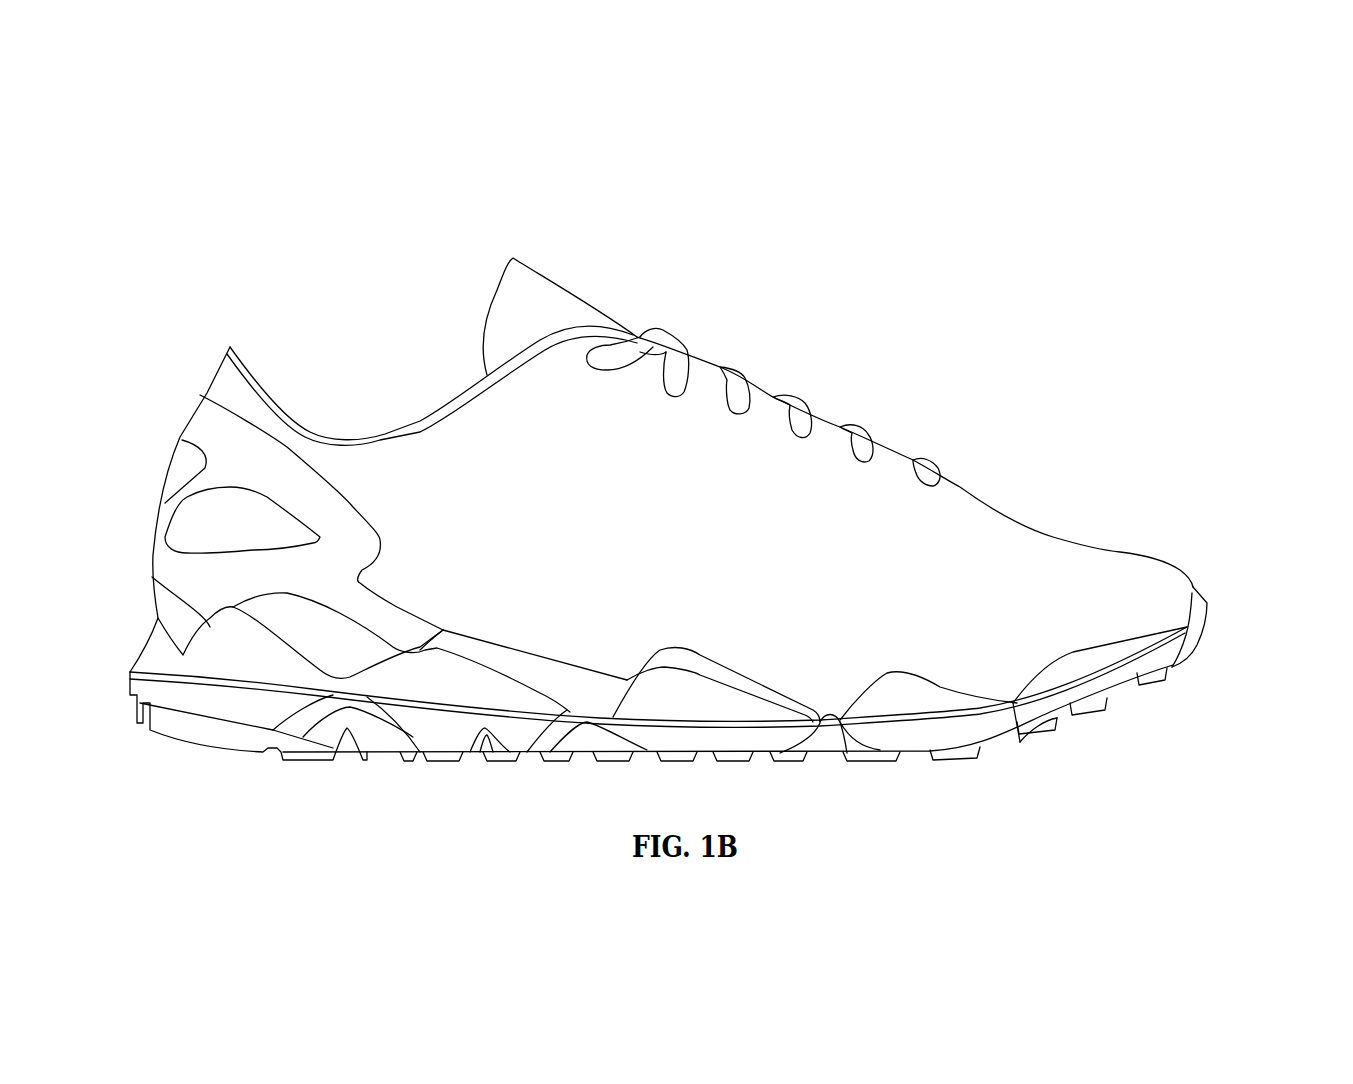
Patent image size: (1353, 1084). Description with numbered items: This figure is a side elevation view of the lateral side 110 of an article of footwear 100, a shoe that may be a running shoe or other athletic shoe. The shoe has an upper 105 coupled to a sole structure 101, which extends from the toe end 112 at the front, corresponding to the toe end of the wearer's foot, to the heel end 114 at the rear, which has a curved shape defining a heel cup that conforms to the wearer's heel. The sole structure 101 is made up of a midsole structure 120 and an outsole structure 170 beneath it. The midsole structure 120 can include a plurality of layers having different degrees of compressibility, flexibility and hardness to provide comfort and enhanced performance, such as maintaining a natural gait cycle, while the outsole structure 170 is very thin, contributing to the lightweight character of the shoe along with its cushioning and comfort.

The article of footwear 100 is at (1038, 178).
The upper 105 is at (905, 551).
The lateral side 110 is at (585, 586).
The toe end 112 is at (1240, 603).
The heel end 114 is at (143, 492).
The midsole structure 120 is at (453, 740).
The outsole structure 170 is at (513, 753).
The sole structure 101 is at (778, 720).